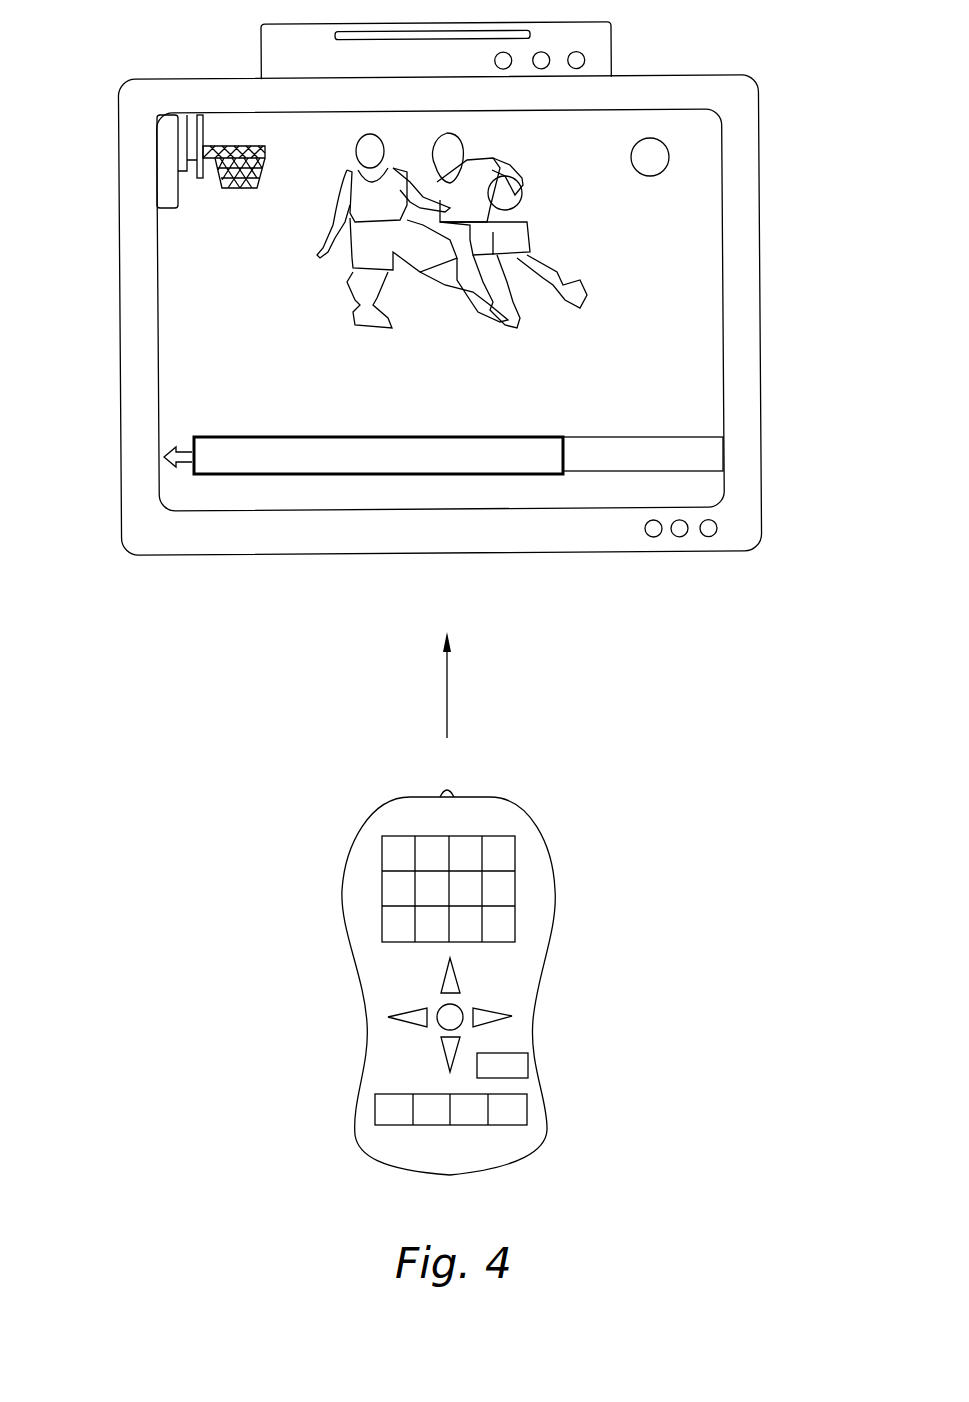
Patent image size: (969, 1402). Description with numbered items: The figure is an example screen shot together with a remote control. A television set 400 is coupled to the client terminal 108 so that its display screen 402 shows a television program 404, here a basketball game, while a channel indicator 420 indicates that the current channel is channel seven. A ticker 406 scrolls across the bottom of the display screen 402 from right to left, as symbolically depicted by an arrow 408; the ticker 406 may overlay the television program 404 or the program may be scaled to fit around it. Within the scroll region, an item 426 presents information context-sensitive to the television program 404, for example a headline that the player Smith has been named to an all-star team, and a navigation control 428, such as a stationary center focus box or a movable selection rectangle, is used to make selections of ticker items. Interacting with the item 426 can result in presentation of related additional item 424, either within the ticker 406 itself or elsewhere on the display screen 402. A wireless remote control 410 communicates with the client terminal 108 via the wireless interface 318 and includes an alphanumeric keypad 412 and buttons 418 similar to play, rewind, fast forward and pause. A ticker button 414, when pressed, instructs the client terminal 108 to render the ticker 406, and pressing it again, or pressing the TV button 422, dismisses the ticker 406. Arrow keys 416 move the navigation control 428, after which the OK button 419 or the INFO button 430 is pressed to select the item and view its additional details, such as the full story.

The client terminal 108 is at (263, 36).
The wireless interface 318 is at (587, 60).
The television set 400 is at (121, 110).
The display screen 402 is at (723, 175).
The television program 404 is at (636, 283).
The ticker 406 is at (590, 428).
The arrow 408 is at (170, 465).
The wireless remote control 410 is at (390, 818).
The alphanumeric keypad 412 is at (378, 885).
The ticker button 414 is at (515, 920).
The arrow keys 416 is at (486, 1000).
The buttons 418 is at (533, 1105).
The OK button 419 is at (446, 1022).
The channel indicator 420 is at (663, 143).
The TV button 422 is at (472, 942).
The additional item 424 is at (580, 466).
The item 426 is at (254, 476).
The navigation control 428 is at (195, 478).
The INFO button 430 is at (530, 1066).